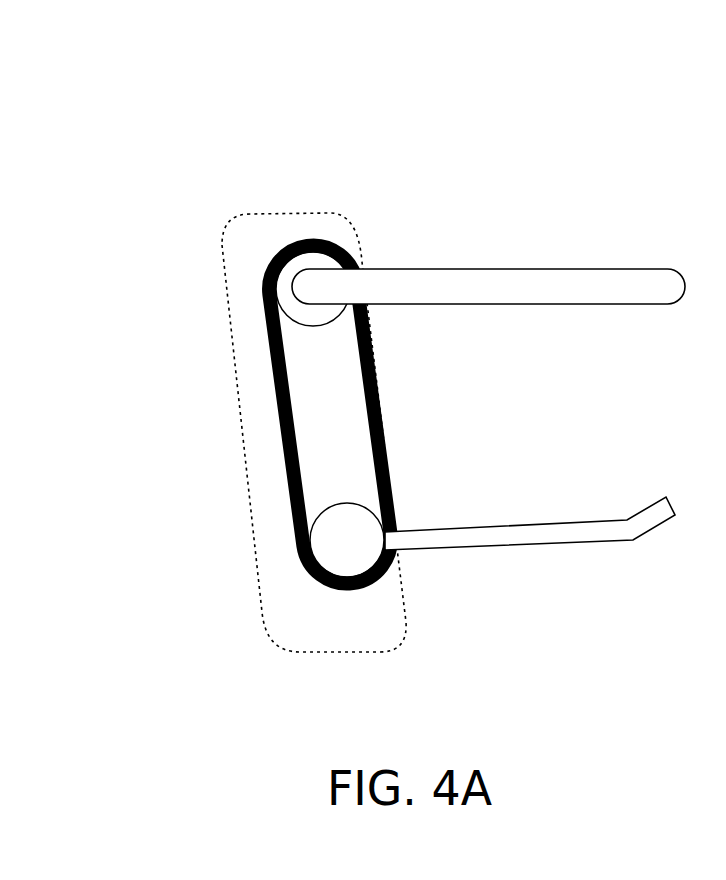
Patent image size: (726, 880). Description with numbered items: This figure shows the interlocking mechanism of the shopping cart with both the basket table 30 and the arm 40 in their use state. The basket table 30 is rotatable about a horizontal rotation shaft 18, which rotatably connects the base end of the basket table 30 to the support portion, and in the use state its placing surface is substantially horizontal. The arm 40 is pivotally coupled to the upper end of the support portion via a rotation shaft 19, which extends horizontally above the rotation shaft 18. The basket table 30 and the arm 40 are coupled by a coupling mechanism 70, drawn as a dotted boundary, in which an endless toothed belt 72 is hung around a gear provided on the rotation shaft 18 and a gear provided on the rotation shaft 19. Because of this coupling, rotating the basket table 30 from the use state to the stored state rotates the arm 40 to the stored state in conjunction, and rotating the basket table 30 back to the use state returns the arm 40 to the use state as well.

The coupling mechanism 70 is at (220, 232).
The endless toothed belt 72 is at (283, 422).
The rotation shaft 19 is at (309, 258).
The rotation shaft 18 is at (335, 543).
The arm 40 is at (490, 269).
The basket table 30 is at (490, 549).